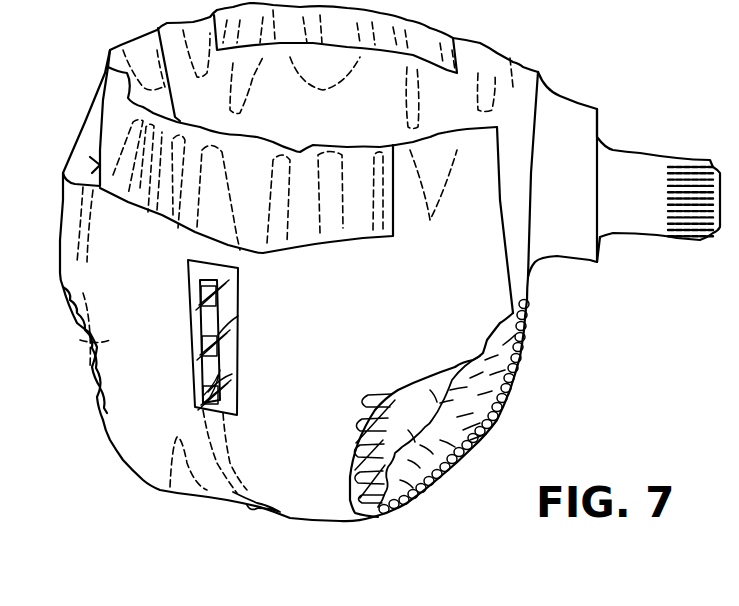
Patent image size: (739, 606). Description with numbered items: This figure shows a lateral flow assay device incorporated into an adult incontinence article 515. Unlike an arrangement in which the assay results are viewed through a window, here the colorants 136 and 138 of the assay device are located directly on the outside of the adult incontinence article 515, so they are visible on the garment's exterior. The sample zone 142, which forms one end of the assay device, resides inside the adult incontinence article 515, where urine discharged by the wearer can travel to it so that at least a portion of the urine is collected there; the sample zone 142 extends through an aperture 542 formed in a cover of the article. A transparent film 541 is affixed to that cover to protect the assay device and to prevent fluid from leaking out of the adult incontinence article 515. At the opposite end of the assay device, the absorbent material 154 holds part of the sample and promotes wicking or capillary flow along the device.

The colorant 136 is at (208, 383).
The colorant 138 is at (213, 333).
The absorbent material 154 is at (217, 305).
The transparent film 541 is at (238, 316).
The aperture 542 is at (235, 373).
The adult incontinence article 515 is at (130, 355).
The sample zone 142 is at (252, 513).